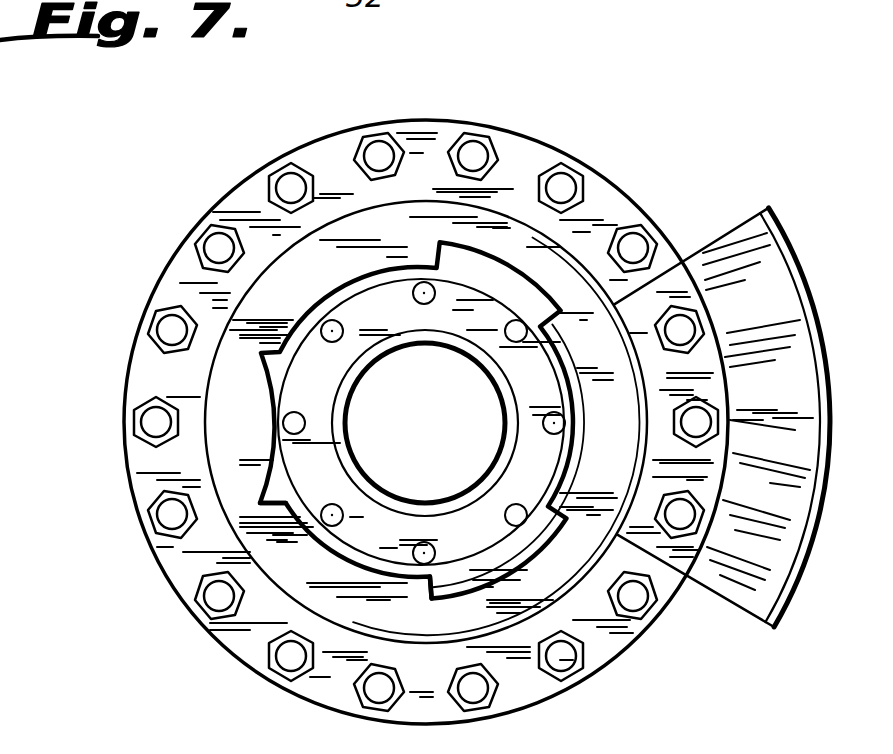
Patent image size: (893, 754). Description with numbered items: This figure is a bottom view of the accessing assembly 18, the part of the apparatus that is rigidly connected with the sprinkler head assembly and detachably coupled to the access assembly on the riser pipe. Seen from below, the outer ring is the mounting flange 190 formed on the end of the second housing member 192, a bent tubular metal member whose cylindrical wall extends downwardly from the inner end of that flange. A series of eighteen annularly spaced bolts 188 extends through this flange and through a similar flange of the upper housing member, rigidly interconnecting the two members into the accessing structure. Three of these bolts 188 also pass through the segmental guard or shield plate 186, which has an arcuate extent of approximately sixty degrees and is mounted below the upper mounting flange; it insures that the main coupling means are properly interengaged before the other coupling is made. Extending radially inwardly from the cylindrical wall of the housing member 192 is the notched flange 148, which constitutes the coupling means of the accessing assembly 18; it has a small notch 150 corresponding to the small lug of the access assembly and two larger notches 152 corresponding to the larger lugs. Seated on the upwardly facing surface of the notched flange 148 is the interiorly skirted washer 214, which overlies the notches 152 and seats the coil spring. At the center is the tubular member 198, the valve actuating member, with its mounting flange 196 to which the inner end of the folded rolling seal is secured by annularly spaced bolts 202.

The accessing assembly 18 is at (603, 151).
The segmental guard or shield plate 186 is at (760, 213).
The bolts 188 is at (170, 330).
The mounting flange 190 is at (187, 557).
The second housing member 192 is at (211, 373).
The notched flange 148 is at (320, 270).
The small notch 150 is at (440, 243).
The notches 152 is at (277, 500).
The mounting flange 196 is at (485, 335).
The tubular member 198 is at (347, 417).
The bolts 202 is at (343, 370).
The interiorly skirted washer 214 is at (277, 457).